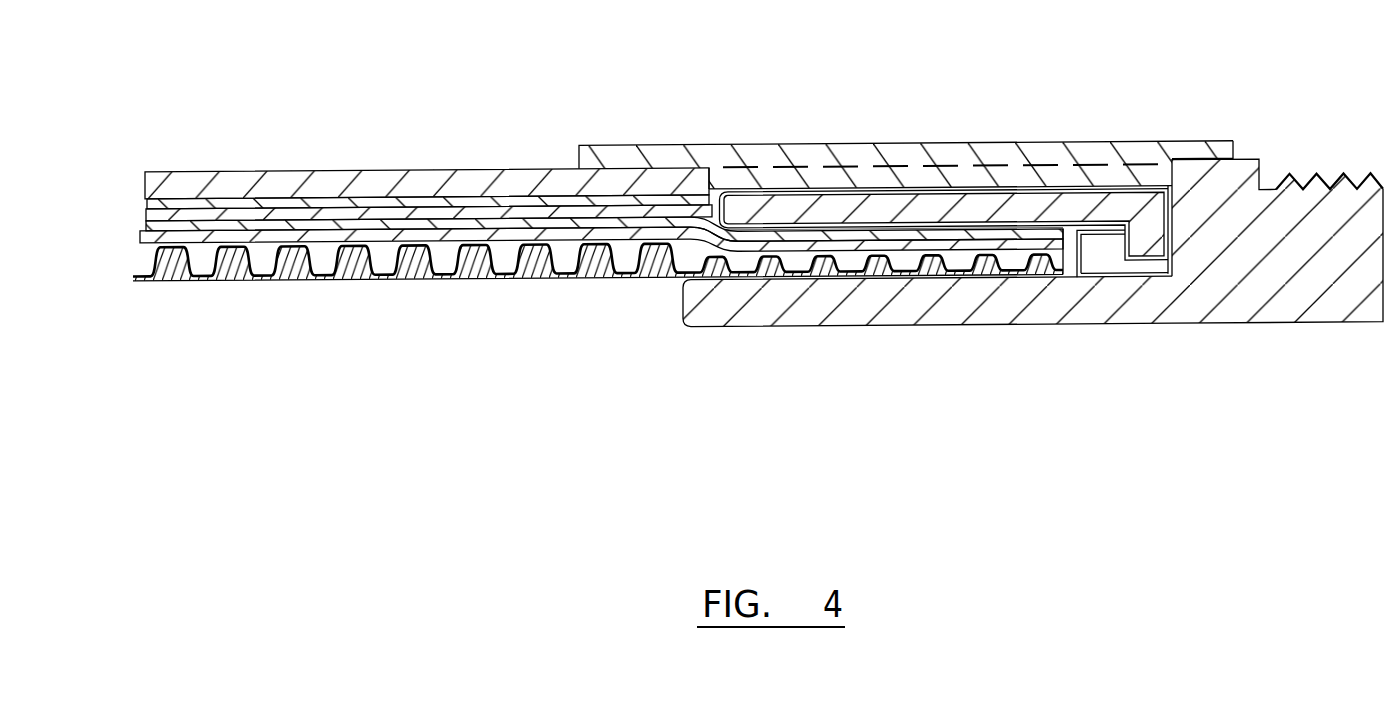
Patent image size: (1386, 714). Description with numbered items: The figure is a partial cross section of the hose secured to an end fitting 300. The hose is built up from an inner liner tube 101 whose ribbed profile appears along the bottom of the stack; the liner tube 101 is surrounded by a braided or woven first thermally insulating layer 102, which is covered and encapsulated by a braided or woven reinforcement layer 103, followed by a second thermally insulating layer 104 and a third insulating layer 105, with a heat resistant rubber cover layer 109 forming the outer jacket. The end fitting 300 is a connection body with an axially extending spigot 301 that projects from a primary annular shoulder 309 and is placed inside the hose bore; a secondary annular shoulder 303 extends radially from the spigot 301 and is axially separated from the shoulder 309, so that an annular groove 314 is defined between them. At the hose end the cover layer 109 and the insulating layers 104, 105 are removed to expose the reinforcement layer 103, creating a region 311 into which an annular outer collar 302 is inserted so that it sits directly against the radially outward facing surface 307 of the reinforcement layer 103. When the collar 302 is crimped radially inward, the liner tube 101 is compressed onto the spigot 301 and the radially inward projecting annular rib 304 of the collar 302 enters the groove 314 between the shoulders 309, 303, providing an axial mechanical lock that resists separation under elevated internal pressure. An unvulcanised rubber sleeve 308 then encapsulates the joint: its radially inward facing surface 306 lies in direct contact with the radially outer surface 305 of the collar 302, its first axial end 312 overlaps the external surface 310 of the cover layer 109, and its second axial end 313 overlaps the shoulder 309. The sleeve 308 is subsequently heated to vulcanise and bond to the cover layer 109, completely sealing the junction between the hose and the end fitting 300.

The liner tube 101 is at (175, 274).
The first thermally insulating layer 102 is at (150, 232).
The reinforcement layer 103 is at (150, 223).
The second thermally insulating layer 104 is at (187, 210).
The third insulating layer 105 is at (212, 192).
The rubber cover layer 109 is at (362, 182).
The end fitting 300 is at (1323, 272).
The spigot 301 is at (900, 312).
The outer collar 302 is at (983, 206).
The secondary annular shoulder 303 is at (1100, 261).
The annular rib 304 is at (1170, 211).
The radially outer surface of collar 305 is at (872, 189).
The radially inward facing surface of sleeve 306 is at (1087, 199).
The radially outward facing surface of reinforcement layer 307 is at (937, 235).
The rubber sleeve 308 is at (801, 161).
The annular shoulder 309 is at (1251, 169).
The external surface of hose cover layer 310 is at (610, 164).
The region 311 is at (716, 186).
The first axial end of sleeve 312 is at (665, 158).
The second axial end of sleeve 313 is at (1213, 157).
The annular groove 314 is at (1147, 266).